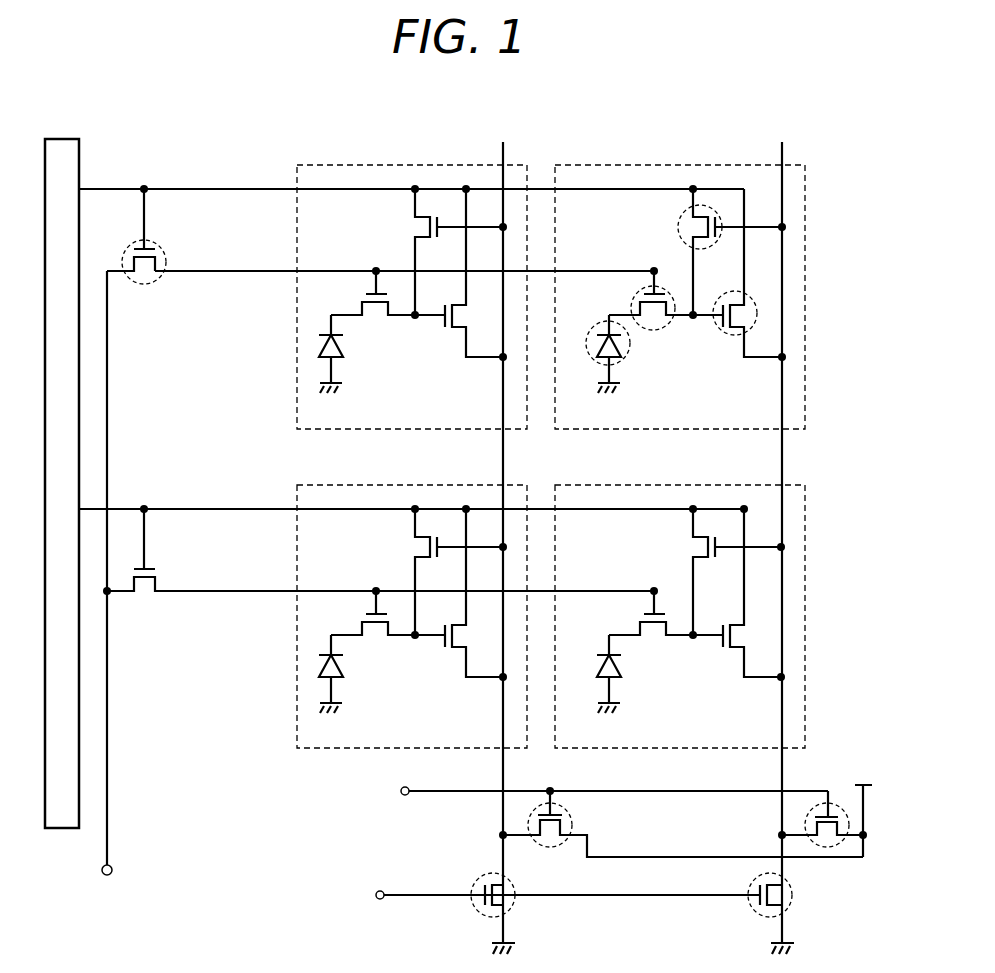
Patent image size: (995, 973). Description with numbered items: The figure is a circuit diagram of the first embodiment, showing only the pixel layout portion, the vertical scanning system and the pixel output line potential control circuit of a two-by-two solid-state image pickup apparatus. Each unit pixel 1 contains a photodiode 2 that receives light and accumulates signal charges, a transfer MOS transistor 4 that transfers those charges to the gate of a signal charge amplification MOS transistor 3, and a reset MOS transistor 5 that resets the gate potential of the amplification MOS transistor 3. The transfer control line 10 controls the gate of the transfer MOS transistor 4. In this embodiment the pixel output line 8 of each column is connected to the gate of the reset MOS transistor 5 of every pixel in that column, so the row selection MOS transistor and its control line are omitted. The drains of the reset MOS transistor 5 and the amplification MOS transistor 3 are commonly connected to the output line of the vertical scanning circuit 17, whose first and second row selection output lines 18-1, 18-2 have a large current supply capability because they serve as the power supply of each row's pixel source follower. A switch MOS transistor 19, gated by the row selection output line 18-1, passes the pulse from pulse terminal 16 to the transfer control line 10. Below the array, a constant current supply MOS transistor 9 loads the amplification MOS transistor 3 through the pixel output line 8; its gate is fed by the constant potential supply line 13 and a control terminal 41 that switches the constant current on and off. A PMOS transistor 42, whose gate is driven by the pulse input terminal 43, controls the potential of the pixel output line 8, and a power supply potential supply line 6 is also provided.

The unit pixel 1 is at (732, 485).
The photodiode 2 is at (626, 350).
The signal charge amplification MOS transistor 3 is at (737, 334).
The transfer MOS transistor 4 is at (638, 306).
The reset MOS transistor 5 is at (690, 230).
The power supply potential supply line 6 is at (864, 808).
The pixel output line 8 is at (786, 486).
The constant current supply MOS transistor 9 is at (505, 900).
The transfer control line 10 is at (549, 271).
The constant potential supply line 13 is at (645, 895).
The pulse terminal 16 is at (110, 875).
The vertical scanning circuit 17 is at (62, 139).
The first row selection output line 18-1 is at (126, 189).
The second row selection output line 18-2 is at (143, 509).
The switch MOS transistor 19 is at (146, 278).
The control terminal 41 is at (380, 899).
The MOS transistor 42 is at (575, 828).
The pulse input terminal 43 is at (405, 797).